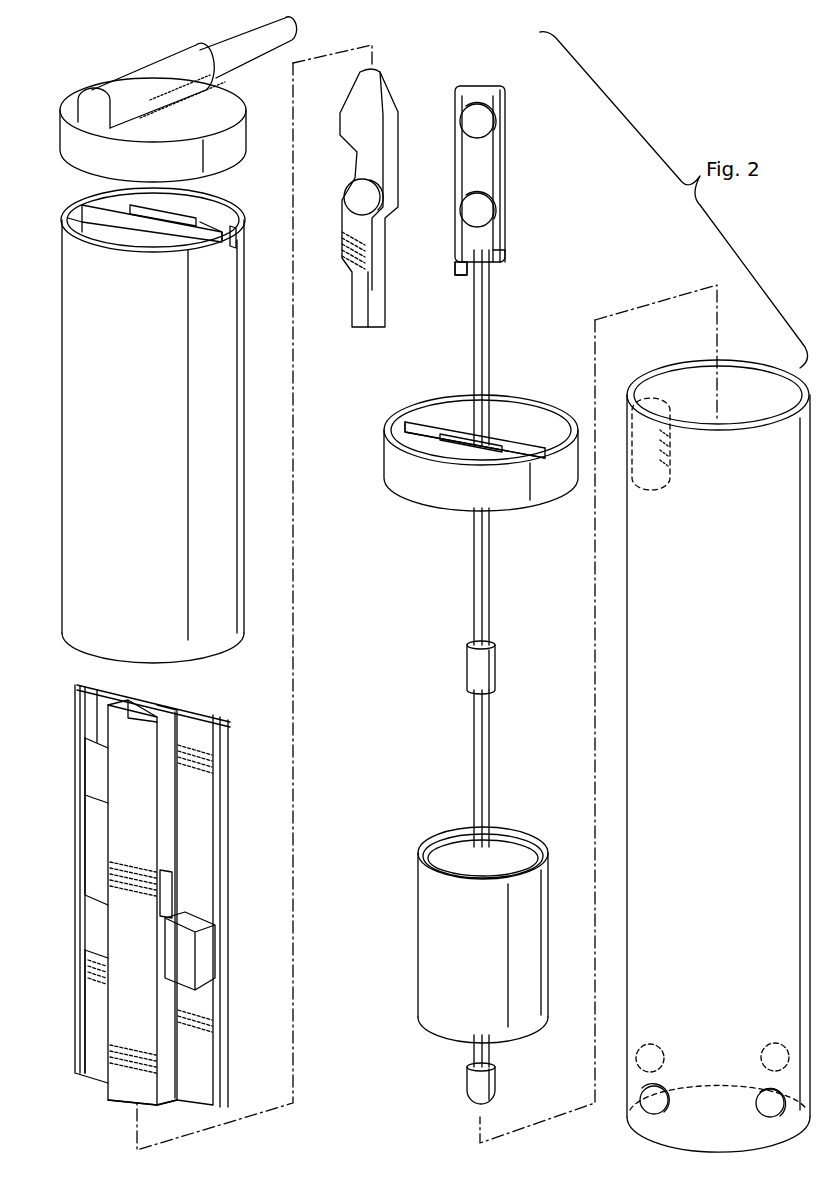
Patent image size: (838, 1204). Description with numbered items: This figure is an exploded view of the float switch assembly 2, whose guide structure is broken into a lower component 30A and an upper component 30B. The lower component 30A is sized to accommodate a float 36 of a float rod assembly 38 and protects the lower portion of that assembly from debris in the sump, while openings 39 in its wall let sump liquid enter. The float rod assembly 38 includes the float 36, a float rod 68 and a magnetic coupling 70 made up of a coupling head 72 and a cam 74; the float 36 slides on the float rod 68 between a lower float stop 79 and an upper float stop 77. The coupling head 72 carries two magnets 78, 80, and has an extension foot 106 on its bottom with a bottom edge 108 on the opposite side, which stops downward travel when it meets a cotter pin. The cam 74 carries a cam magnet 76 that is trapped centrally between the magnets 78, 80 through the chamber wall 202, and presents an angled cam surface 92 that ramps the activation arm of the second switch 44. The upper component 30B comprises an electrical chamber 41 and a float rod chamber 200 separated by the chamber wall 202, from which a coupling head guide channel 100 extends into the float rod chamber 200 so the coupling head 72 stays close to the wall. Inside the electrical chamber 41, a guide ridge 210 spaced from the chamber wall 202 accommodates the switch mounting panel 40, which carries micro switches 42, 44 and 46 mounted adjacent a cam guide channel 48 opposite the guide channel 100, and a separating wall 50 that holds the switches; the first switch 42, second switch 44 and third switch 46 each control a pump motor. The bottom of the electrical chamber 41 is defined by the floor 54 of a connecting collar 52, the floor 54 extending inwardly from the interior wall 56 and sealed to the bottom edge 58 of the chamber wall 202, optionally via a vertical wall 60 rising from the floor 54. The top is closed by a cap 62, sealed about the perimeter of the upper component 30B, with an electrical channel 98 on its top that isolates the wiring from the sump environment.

The fishing rod holder assembly 2 is at (62, 85).
The electrical channel 98 is at (126, 78).
The coupling head guide channel 100 is at (176, 212).
The cap 62 is at (162, 104).
The chamber wall 202 is at (236, 226).
The float rod chamber 200 is at (240, 222).
The guide ridge 210 is at (86, 230).
The electrical chamber 41 is at (80, 240).
The upper component 30B is at (179, 389).
The angled cam surface 92 is at (205, 712).
The cam guide channel 48 is at (122, 722).
The third switch 46 is at (96, 770).
The separating wall 50 is at (92, 838).
The switch mounting panel 40 is at (147, 895).
The first switch 42 is at (92, 932).
The second switch 44 is at (186, 950).
The bottom edge 58 is at (100, 1075).
The magnetic coupling 70 is at (515, 82).
The cam 74 is at (370, 152).
The cam magnet 76 is at (362, 200).
The coupling magnet 78 is at (482, 118).
The coupling head 72 is at (551, 177).
The coupling magnet 80 is at (480, 205).
The bottom edge 108 is at (498, 262).
The extension foot 106 is at (460, 260).
The float rod assembly 38 is at (504, 298).
The interior wall 56 is at (386, 420).
The vertical wall 60 is at (448, 436).
The connecting collar 52 is at (450, 451).
The floor 54 is at (452, 458).
The float rod 68 is at (491, 578).
The upper float stop 77 is at (484, 670).
The lower component 30A is at (640, 690).
The float 36 is at (434, 968).
The lower float stop 79 is at (476, 1088).
The openings 39 is at (644, 1060).